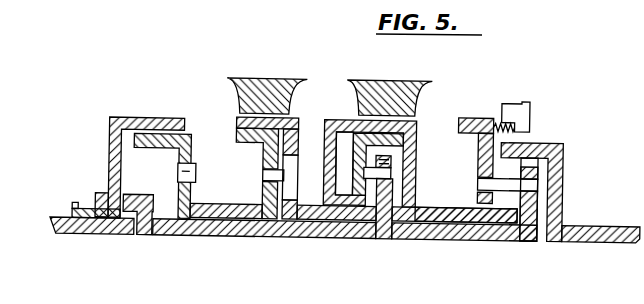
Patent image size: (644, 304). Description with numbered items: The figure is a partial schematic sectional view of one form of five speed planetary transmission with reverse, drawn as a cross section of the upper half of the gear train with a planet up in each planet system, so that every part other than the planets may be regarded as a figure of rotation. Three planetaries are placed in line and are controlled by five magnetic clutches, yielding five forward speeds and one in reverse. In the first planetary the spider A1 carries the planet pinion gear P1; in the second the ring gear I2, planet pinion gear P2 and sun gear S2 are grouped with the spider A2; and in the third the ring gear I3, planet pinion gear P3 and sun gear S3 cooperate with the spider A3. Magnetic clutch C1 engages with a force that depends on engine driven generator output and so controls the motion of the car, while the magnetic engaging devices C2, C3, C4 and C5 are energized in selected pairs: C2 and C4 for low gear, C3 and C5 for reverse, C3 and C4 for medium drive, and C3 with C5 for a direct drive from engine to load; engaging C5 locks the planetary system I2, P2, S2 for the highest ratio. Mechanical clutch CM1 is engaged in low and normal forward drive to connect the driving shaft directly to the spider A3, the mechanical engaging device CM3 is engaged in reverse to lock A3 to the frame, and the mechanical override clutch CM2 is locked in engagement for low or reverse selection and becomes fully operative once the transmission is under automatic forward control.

The magnetic clutch C1 is at (140, 153).
The magnetic engaging device C3 is at (169, 154).
The mechanical clutch CM1 is at (79, 192).
The mechanical override clutch CM2 is at (146, 196).
The spider A1 is at (226, 197).
The magnetic engaging device C2 is at (266, 136).
The planet pinion gear P1 is at (300, 174).
The magnetic engaging device C4 is at (378, 132).
The internal or ring gear I2 is at (370, 164).
The planet pinion gear P2 is at (345, 163).
The spider A2 is at (407, 188).
The sun gear S2 is at (391, 209).
The magnetic clutch C5 is at (459, 153).
The mechanical engaging device CM3 is at (494, 112).
The internal or ring gear I3 is at (492, 194).
The planet pinion gear P3 is at (466, 203).
The spider A3 is at (545, 192).
The sun gear S3 is at (344, 248).